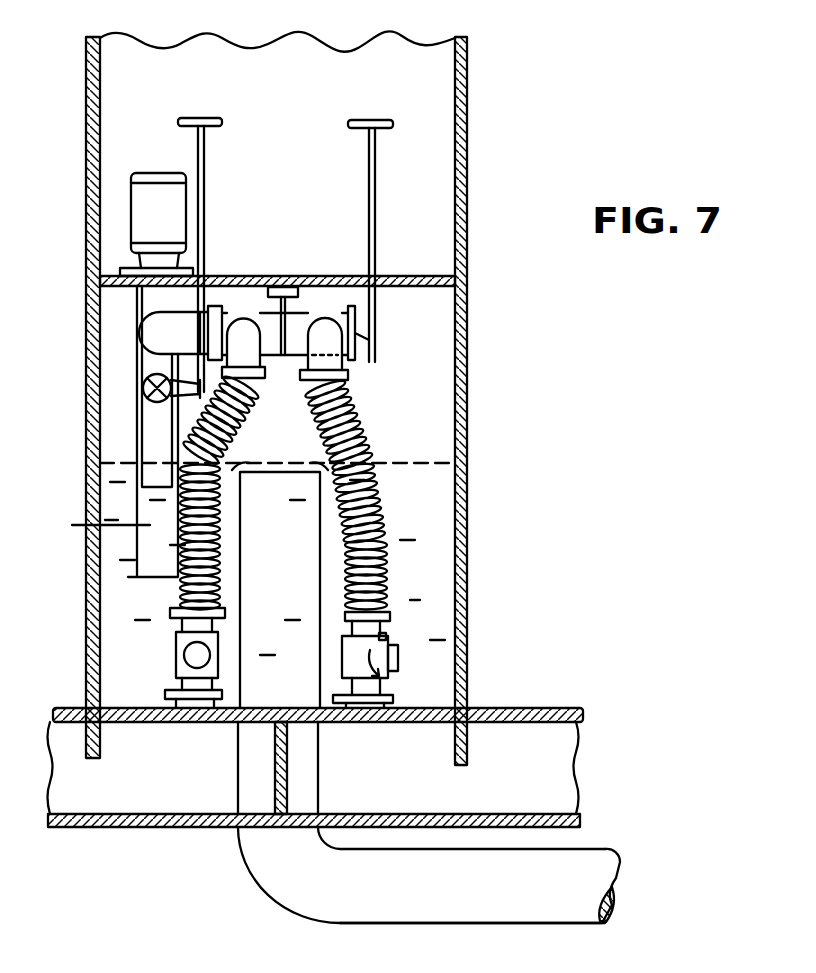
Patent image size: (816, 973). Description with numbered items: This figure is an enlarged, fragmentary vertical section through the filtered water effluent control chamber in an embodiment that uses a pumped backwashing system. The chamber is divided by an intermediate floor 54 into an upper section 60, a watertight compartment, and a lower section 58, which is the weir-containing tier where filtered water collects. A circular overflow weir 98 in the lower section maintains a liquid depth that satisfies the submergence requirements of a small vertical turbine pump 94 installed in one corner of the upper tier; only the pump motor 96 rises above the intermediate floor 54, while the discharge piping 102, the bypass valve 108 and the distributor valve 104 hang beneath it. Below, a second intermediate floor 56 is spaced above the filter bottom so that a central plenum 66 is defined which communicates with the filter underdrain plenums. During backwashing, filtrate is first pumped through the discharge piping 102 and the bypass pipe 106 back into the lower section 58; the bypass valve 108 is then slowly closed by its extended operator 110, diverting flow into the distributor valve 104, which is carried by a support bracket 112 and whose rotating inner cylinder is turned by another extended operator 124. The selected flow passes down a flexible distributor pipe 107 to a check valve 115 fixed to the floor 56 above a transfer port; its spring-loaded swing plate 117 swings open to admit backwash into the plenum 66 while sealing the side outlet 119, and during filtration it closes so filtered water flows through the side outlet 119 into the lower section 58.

The intermediate floor 54 is at (432, 262).
The intermediate floor 56 is at (130, 702).
The lower section 58 is at (440, 352).
The upper section 60 is at (342, 56).
The central plenum 66 is at (352, 752).
The vertical turbine pump 94 is at (120, 268).
The pump motor 96 is at (167, 170).
The circular overflow weir 98 is at (288, 474).
The discharge piping 102 is at (152, 330).
The distributor valve 104 is at (230, 312).
The bypass pipe 106 is at (150, 430).
The flexible distributor pipe 107 is at (380, 508).
The bypass valve 108 is at (145, 385).
The extended operator 110 is at (206, 160).
The support bracket 112 is at (283, 366).
The check valve 115 is at (383, 634).
The spring-loaded swing plate 117 is at (362, 630).
The side outlet 119 is at (398, 656).
The extended operator 124 is at (377, 183).